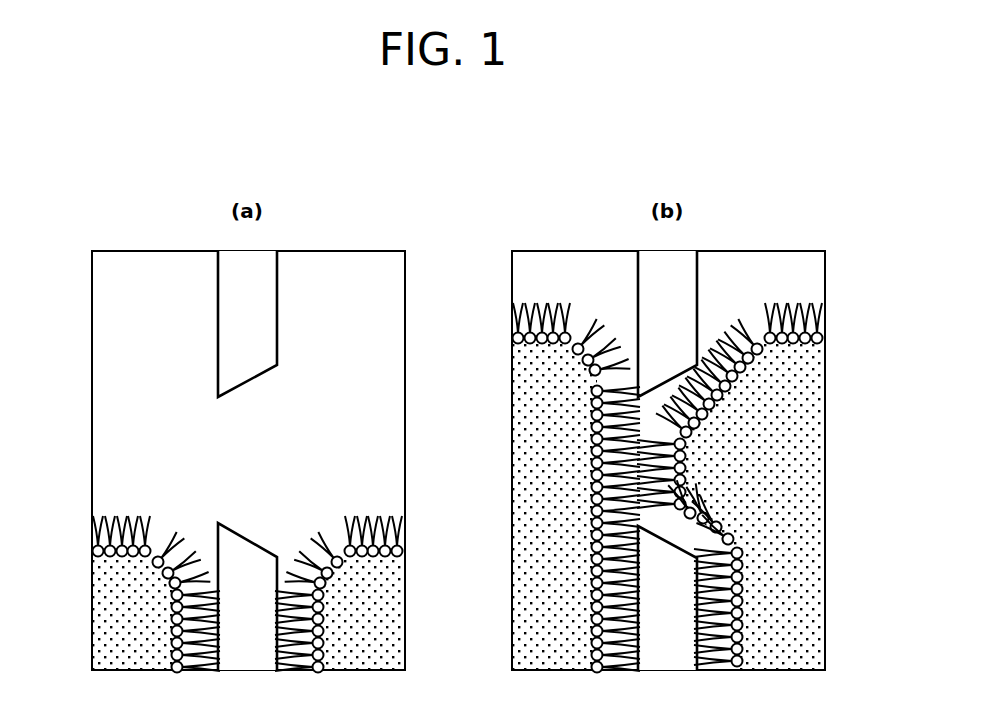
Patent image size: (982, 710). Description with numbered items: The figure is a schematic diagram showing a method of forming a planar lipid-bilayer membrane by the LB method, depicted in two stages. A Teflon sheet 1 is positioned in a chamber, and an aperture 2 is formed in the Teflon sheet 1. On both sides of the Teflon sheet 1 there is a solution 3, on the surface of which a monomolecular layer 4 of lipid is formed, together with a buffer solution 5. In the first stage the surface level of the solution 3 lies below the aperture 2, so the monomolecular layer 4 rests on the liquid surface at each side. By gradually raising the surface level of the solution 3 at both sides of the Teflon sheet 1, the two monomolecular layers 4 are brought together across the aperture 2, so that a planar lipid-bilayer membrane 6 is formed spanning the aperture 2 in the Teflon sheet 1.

The Teflon sheet 1 is at (277, 300).
The aperture 2 is at (230, 476).
The solution 3 is at (118, 616).
The monomolecular layer of lipid 4 is at (130, 517).
The buffer solution 5 is at (385, 613).
The planar lipid-bilayer membrane 6 is at (687, 468).